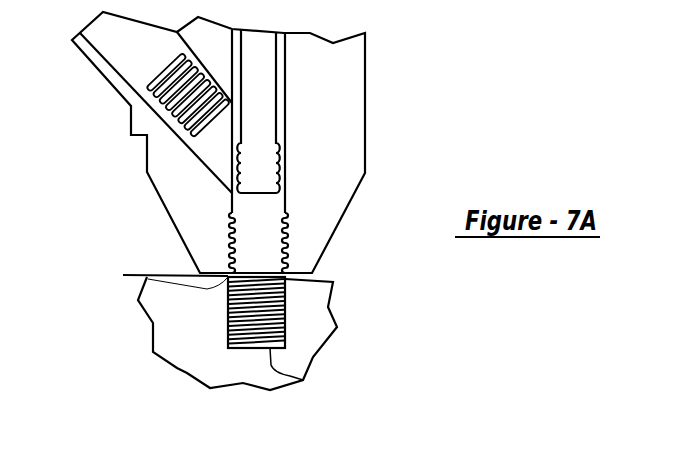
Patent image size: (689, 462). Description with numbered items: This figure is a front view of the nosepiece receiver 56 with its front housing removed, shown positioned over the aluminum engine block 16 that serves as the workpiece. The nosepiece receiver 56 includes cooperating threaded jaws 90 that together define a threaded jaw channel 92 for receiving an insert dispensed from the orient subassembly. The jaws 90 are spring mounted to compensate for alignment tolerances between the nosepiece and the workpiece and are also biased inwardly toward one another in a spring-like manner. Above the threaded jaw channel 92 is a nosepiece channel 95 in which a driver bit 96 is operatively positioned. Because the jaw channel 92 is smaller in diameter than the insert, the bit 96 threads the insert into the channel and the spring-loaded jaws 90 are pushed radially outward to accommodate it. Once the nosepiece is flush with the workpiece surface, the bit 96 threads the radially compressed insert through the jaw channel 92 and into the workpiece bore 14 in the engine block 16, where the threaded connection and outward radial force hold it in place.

The nosepiece receiver 56 is at (388, 163).
The threaded jaws 90 is at (180, 200).
The nosepiece channel 95 is at (277, 118).
The driver bit 96 is at (252, 60).
The threaded jaw channel 92 is at (250, 248).
The engine block 16 is at (182, 345).
The workpiece bores 14 is at (300, 378).